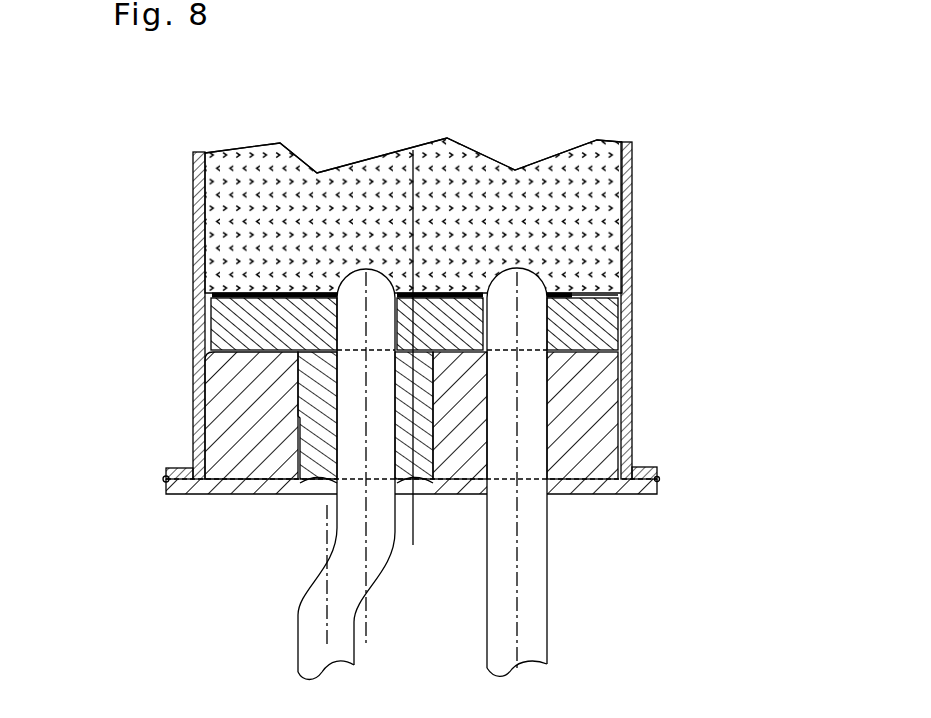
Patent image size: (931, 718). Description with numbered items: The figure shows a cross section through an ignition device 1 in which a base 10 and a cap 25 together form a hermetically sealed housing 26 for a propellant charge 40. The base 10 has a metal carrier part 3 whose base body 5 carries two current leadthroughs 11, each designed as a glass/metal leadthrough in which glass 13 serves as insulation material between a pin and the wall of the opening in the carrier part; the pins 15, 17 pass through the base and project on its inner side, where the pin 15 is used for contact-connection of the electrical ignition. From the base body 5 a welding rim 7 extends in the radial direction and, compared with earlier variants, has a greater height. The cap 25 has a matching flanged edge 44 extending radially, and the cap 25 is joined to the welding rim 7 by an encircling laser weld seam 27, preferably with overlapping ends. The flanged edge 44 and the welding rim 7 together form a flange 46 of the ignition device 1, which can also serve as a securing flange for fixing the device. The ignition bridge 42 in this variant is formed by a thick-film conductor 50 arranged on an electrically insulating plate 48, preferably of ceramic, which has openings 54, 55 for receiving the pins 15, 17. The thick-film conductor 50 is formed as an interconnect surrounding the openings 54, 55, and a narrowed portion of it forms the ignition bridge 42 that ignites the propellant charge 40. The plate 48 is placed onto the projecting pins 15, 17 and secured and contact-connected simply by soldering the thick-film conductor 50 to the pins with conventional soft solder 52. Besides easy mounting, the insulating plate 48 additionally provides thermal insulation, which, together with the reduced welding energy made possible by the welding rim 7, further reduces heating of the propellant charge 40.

The ignition device 1 is at (686, 398).
The metal carrier part 3 is at (421, 373).
The base body 5 is at (248, 421).
The welding rim 7 is at (627, 495).
The base 10 is at (432, 542).
The current leadthrough 11 is at (322, 496).
The glass 13 is at (312, 450).
The pin 15 is at (297, 630).
The pin 17 is at (550, 627).
The cap 25 is at (192, 380).
The housing 26 is at (630, 267).
The laser weld seam 27 is at (658, 481).
The propellant charge 40 is at (212, 248).
The ignition bridge 42 is at (413, 150).
The flanged edge 44 is at (640, 467).
The flange 46 is at (156, 470).
The electrically insulating plate 48 is at (622, 313).
The thick-film conductor 50 is at (330, 292).
The solder 52 is at (622, 234).
The opening 54 is at (370, 292).
The opening 55 is at (529, 292).